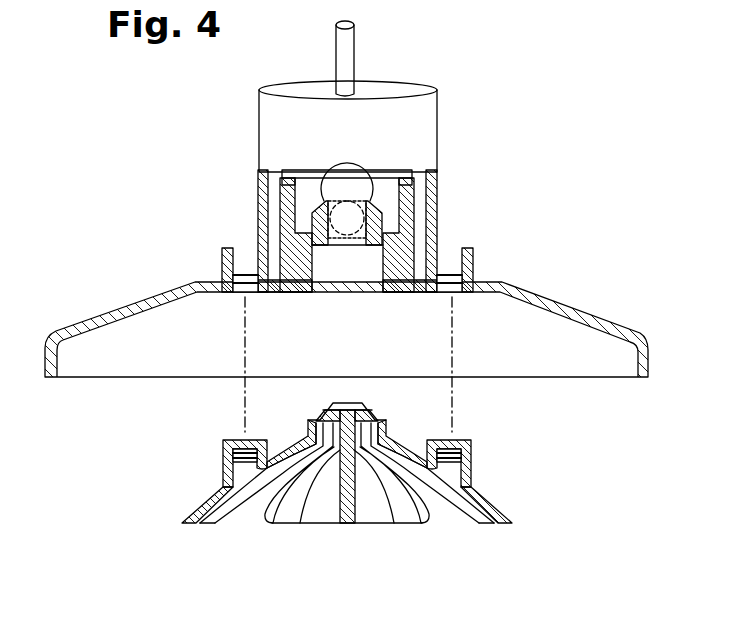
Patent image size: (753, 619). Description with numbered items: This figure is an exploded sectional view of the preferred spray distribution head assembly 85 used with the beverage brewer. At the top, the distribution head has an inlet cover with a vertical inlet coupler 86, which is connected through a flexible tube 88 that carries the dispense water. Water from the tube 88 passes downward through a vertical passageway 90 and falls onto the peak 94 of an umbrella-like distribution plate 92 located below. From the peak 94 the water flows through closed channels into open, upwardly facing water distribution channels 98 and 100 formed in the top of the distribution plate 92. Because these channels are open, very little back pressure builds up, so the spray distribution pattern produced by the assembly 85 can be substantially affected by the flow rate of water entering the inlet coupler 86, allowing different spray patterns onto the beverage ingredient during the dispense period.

The spray distribution head assembly 85 is at (531, 258).
The vertical inlet coupler 86 is at (408, 155).
The flexible tube 88 is at (349, 60).
The vertical passageway 90 is at (330, 221).
The umbrella-like distribution plate 92 is at (478, 492).
The peak 94 is at (366, 408).
The water distribution channel 98 is at (405, 445).
The water distribution channel 100 is at (293, 516).